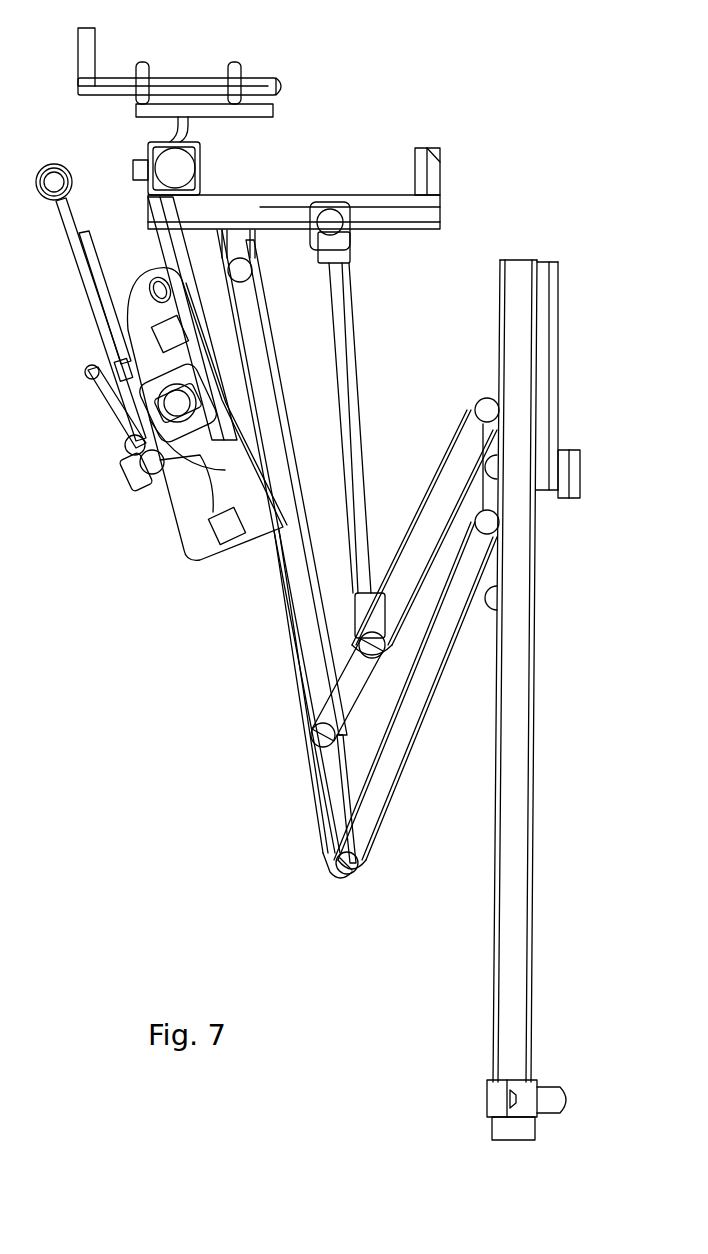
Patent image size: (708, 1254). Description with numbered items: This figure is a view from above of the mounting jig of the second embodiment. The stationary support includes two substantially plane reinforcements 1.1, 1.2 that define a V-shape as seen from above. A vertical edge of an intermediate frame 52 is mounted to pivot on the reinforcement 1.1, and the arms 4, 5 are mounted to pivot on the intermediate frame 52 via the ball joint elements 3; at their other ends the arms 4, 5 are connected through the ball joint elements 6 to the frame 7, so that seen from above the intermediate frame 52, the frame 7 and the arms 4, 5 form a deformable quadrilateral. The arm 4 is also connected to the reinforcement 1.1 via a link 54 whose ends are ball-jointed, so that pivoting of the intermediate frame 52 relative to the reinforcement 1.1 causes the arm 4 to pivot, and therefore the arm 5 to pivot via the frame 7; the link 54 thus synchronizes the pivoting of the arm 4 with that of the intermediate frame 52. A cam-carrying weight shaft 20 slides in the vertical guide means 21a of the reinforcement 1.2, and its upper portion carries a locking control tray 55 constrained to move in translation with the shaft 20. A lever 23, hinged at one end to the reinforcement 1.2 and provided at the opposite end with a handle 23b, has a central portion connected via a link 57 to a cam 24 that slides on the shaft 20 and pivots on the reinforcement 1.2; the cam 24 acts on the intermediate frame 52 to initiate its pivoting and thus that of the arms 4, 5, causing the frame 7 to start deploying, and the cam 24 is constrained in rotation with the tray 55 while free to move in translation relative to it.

The reinforcement 1.1 is at (383, 207).
The reinforcement 1.2 is at (267, 523).
The ball joint elements 3 is at (360, 862).
The arm 4 is at (437, 508).
The arm 5 is at (442, 655).
The ball joint elements 6 is at (490, 405).
The frame 7 is at (518, 768).
The cam-carrying weight shaft 20 is at (140, 497).
The vertical guide means 21a is at (193, 322).
The lever 23 is at (93, 307).
The handle 23b is at (75, 190).
The cam 24 is at (185, 547).
The intermediate frame 52 is at (300, 685).
The link 54 is at (353, 408).
The locking control tray 55 is at (130, 305).
The link 57 is at (113, 420).